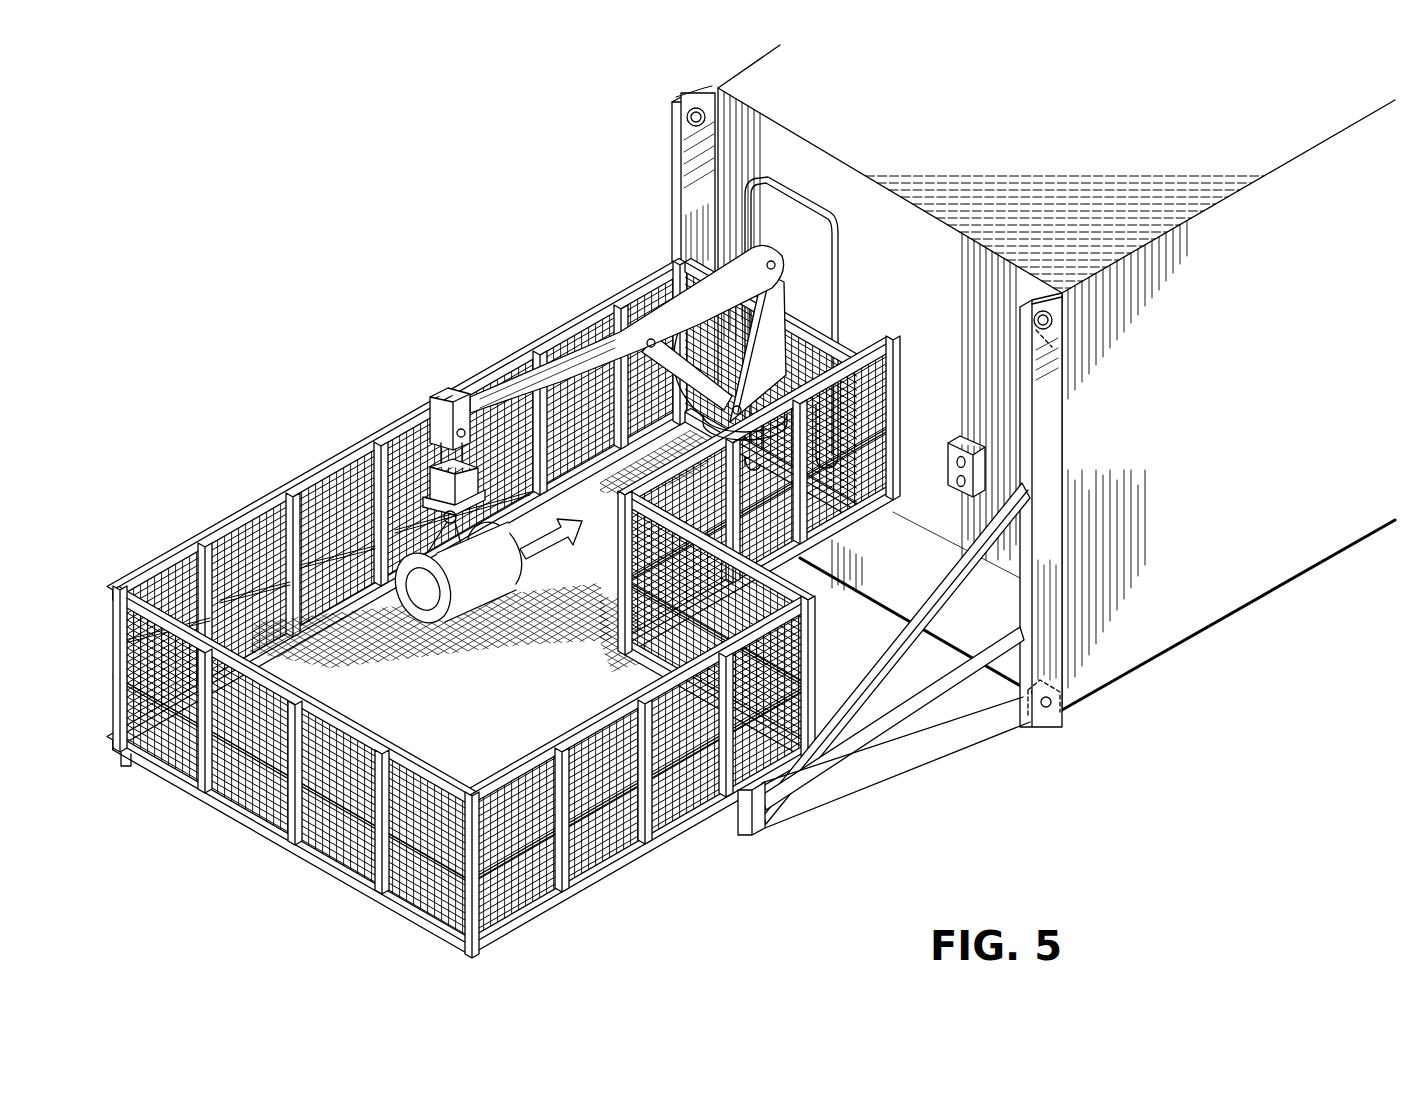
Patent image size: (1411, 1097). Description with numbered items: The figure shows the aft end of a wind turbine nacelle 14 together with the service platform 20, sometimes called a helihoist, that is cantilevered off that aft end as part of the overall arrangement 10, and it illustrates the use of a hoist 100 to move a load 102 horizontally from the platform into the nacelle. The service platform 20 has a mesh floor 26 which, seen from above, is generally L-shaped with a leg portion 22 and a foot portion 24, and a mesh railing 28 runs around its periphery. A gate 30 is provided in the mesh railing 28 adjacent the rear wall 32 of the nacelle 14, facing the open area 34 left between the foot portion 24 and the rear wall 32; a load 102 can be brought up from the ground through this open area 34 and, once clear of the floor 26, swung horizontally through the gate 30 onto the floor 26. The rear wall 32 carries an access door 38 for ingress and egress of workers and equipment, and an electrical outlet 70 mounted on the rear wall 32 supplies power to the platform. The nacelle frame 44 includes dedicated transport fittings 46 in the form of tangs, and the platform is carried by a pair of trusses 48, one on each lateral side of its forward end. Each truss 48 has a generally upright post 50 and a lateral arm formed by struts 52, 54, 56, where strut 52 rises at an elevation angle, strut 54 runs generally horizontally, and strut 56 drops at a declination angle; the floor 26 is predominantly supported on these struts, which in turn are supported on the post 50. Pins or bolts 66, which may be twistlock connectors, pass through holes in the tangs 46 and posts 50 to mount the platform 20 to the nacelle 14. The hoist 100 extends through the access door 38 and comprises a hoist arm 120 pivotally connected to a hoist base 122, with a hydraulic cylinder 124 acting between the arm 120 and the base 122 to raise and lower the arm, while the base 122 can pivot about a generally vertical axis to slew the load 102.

The loading system 10 is at (290, 184).
The nacelle 14 is at (1003, 401).
The service platform 20 is at (503, 610).
The leg portion 22 is at (362, 608).
The foot portion 24 is at (346, 773).
The floor 26 is at (440, 735).
The mesh railing 28 is at (285, 835).
The gate 30 is at (762, 446).
The rear wall 32 is at (912, 322).
The open area 34 is at (855, 623).
The access door 38 is at (792, 212).
The frame 44 is at (1192, 648).
The transport fittings 46 is at (690, 102).
The truss 48 is at (884, 674).
The upright post 50 is at (672, 205).
The strut 52 is at (893, 658).
The strut 54 is at (884, 735).
The strut 56 is at (760, 830).
The pins or bolts 66 is at (692, 126).
The electrical outlet 70 is at (950, 448).
The hoist 100 is at (478, 380).
The load 102 is at (488, 603).
The hoist arm 120 is at (680, 342).
The hoist base 122 is at (792, 280).
The hydraulic cylinder 124 is at (690, 340).